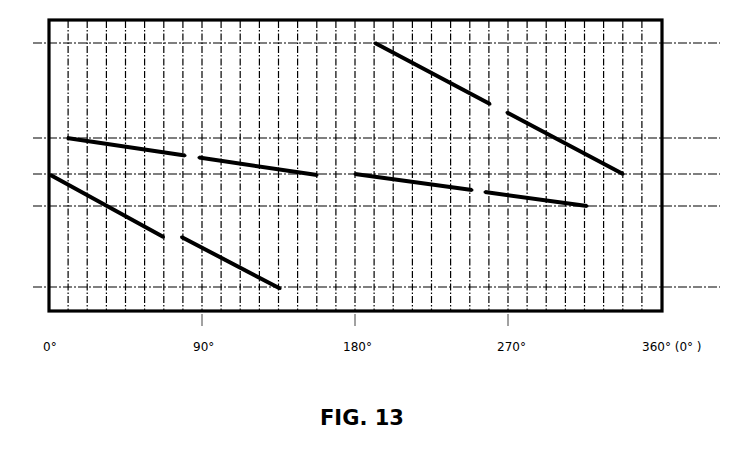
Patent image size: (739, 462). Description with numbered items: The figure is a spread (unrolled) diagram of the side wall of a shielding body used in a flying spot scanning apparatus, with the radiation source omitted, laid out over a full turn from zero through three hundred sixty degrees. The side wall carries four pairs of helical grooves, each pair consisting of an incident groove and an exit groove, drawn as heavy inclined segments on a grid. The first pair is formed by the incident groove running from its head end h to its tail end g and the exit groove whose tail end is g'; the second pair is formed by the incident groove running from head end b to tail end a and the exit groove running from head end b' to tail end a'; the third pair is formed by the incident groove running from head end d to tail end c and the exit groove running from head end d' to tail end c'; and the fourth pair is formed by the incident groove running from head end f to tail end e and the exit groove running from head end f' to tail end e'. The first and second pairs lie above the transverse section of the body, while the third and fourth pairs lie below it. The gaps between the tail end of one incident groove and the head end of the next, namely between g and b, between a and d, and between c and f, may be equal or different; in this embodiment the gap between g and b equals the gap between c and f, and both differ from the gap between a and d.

The tail end of incident groove ba a is at (319, 167).
The head end of incident groove ba b is at (287, 101).
The tail end of incident groove dc c is at (473, 199).
The head end of incident groove dc d is at (349, 183).
The tail end of incident groove fe e is at (579, 212).
The head end of incident groove fe f is at (490, 186).
The tail end of incident groove hg g is at (188, 163).
The head end of incident groove hg h is at (62, 145).
The tail end of exit groove b' a' is at (629, 169).
The head end of exit groove b'a' b' is at (512, 104).
The tail end of exit groove d' c' is at (159, 247).
The head end of exit groove d'c' d' is at (56, 187).
The tail end of exit groove f' e' is at (286, 282).
The head end of exit groove f'e' f' is at (185, 229).
The tail end of exit groove h' g' is at (493, 120).